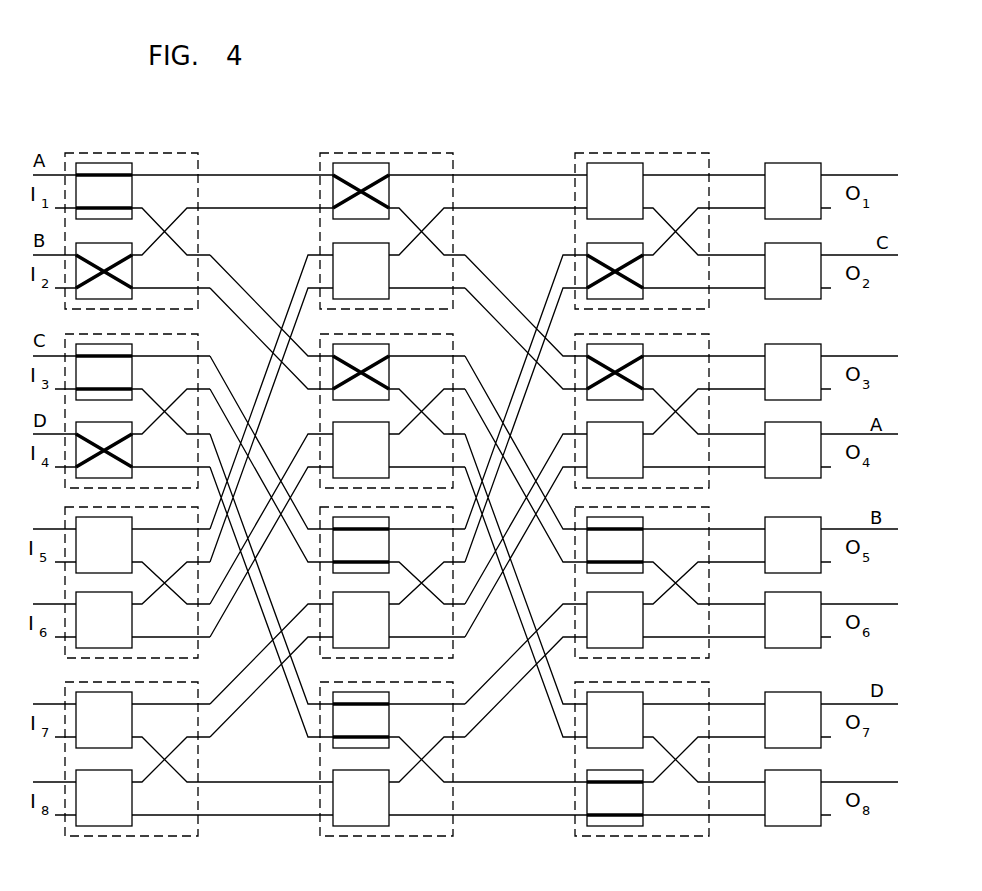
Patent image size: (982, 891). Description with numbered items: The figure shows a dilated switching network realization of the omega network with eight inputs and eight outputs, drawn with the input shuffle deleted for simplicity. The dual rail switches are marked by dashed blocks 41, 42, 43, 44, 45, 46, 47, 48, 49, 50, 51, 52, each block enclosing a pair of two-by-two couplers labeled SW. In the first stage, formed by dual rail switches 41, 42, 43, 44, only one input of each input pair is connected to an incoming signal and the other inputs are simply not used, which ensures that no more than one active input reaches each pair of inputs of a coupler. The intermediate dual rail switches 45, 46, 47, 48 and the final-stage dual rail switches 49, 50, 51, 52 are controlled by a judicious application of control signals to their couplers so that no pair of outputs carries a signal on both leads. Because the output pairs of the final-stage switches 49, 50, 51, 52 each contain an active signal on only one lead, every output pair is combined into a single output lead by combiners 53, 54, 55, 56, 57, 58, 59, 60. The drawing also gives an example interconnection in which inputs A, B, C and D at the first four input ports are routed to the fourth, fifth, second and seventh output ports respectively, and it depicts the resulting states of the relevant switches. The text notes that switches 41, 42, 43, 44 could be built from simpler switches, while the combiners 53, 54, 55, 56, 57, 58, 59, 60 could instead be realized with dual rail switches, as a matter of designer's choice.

The dual rail switch 41 is at (183, 153).
The dual rail switch 42 is at (183, 334).
The dual rail switch 43 is at (197, 656).
The dual rail switch 44 is at (182, 682).
The dual rail switch 45 is at (437, 153).
The dual rail switch 46 is at (437, 334).
The dual rail switch 47 is at (452, 656).
The dual rail switch 48 is at (430, 683).
The dual rail switch 49 is at (695, 155).
The dual rail switch 50 is at (695, 334).
The dual rail switch 51 is at (700, 507).
The dual rail switch 52 is at (690, 685).
The combiner 53 is at (790, 166).
The combiner 54 is at (790, 246).
The combiner 55 is at (790, 347).
The combiner 56 is at (790, 425).
The combiner 57 is at (790, 520).
The combiner 58 is at (790, 595).
The combiner 59 is at (790, 695).
The combiner 60 is at (790, 773).